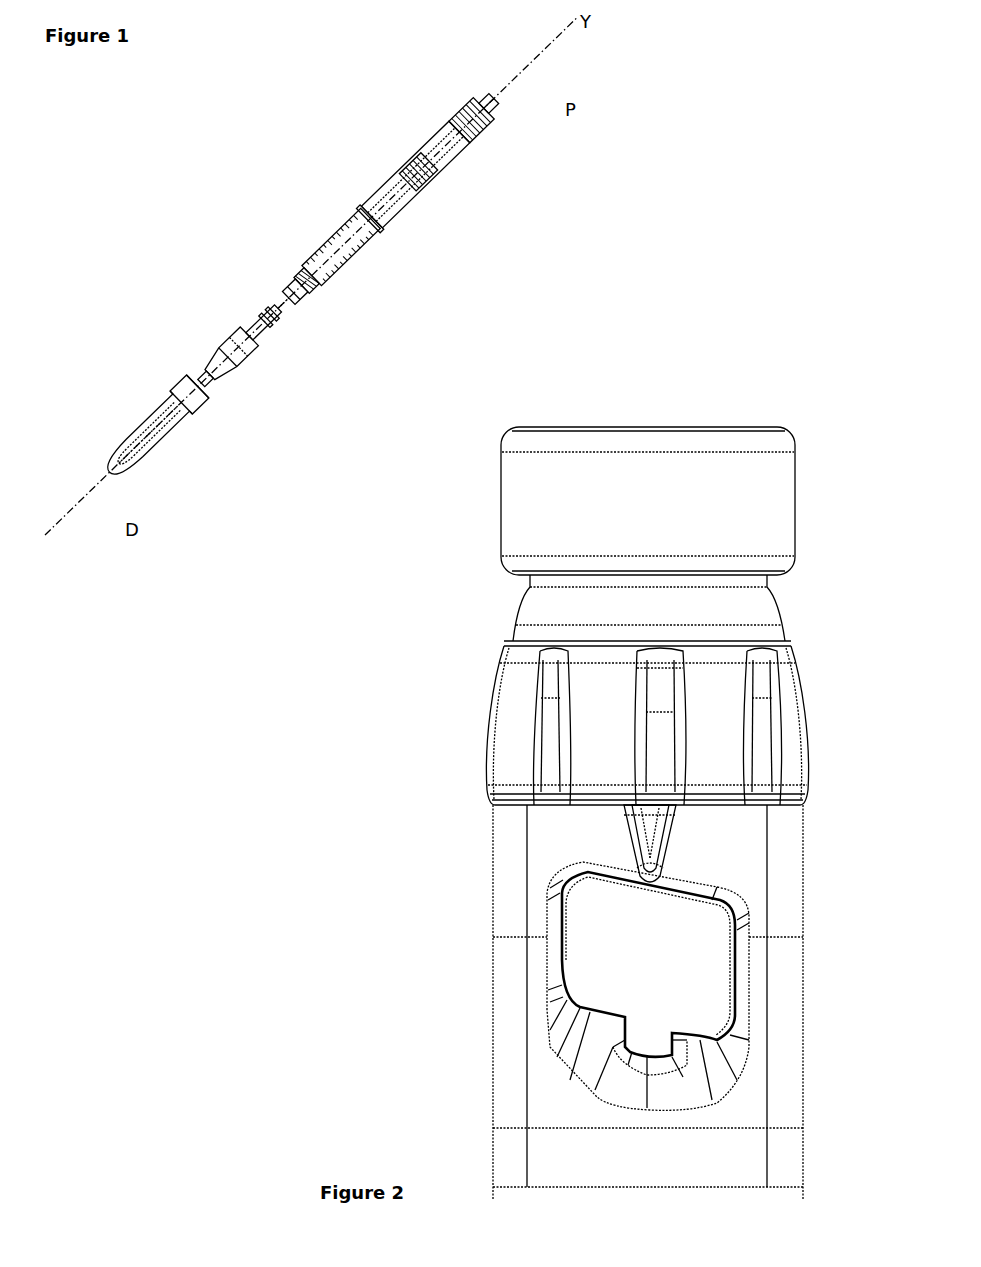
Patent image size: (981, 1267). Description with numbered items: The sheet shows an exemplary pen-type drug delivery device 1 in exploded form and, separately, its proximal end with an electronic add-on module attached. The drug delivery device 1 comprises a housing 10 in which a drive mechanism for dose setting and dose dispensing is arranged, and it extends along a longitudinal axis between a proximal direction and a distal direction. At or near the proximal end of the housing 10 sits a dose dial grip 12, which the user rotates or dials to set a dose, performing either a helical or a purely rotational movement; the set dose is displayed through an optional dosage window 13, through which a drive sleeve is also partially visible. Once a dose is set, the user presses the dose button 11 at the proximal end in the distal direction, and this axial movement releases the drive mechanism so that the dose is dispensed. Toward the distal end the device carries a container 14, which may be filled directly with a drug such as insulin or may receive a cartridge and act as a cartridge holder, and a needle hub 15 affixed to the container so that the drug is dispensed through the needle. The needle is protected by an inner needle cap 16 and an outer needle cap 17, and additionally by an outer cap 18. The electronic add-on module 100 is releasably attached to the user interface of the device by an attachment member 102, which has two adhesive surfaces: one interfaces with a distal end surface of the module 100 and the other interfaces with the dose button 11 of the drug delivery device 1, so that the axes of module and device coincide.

In FIG. 1, the drug delivery device 1 is at (338, 195).
In FIG. 2, the drug delivery device 1 is at (416, 838).
In FIG. 1, the housing 10 is at (337, 251).
In FIG. 2, the housing 10 is at (806, 868).
In FIG. 1, the dose button 11 is at (471, 120).
In FIG. 2, the dose button 11 is at (784, 617).
In FIG. 1, the dose dial grip 12 is at (488, 113).
In FIG. 2, the dose dial grip 12 is at (808, 733).
In FIG. 1, the dosage window 13 is at (418, 172).
In FIG. 1, the container 14 is at (415, 174).
In FIG. 2, the container 14 is at (564, 974).
In FIG. 1, the needle hub 15 is at (294, 291).
In FIG. 1, the inner needle cap 16 is at (269, 317).
In FIG. 1, the outer needle cap 17 is at (225, 359).
In FIG. 1, the outer cap 18 is at (153, 429).
In FIG. 2, the electronic add-on module 100 is at (460, 506).
In FIG. 2, the attachment member 102 is at (522, 582).